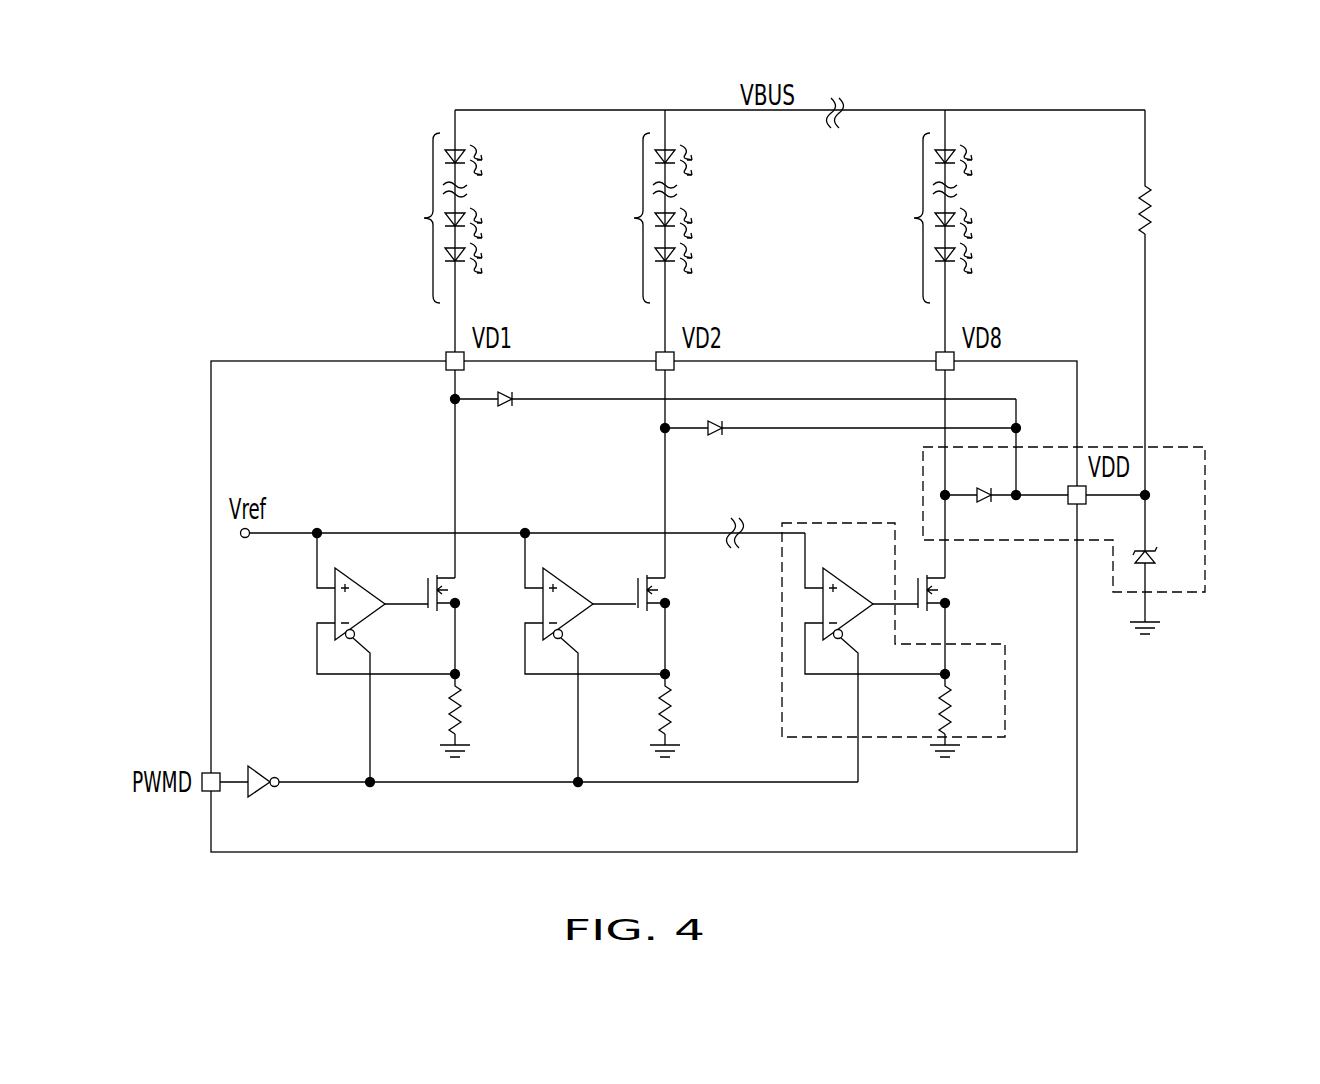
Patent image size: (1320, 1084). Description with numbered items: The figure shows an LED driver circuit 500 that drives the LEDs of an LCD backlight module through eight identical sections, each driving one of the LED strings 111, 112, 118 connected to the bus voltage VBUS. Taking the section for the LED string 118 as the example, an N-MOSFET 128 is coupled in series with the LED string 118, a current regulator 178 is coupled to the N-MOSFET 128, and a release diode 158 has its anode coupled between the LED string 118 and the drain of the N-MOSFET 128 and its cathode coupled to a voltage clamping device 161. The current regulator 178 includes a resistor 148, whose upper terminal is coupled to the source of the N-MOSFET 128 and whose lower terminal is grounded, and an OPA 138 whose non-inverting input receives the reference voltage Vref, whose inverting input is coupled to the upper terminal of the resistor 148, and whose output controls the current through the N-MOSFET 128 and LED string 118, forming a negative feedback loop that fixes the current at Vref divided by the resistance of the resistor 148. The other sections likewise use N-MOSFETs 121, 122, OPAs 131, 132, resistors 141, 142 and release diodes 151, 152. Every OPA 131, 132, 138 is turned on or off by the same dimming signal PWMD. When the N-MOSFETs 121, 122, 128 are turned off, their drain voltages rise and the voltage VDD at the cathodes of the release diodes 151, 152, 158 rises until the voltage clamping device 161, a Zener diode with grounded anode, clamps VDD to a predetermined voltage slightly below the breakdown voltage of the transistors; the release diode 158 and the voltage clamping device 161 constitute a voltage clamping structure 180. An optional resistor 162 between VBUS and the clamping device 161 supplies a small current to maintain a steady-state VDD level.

The LED string 111 is at (429, 231).
The LED string 112 is at (639, 231).
The LED string 118 is at (917, 231).
The N-MOSFET 121 is at (464, 593).
The N-MOSFET 122 is at (674, 593).
The N-MOSFET 128 is at (955, 593).
The OPA 131 is at (386, 657).
The OPA 132 is at (595, 657).
The OPA 138 is at (875, 657).
The resistor 141 is at (472, 680).
The resistor 142 is at (682, 680).
The resistor 148 is at (961, 680).
The release diode 151 is at (735, 422).
The release diode 152 is at (840, 448).
The release diode 158 is at (1006, 477).
The voltage clamping device 161 is at (1152, 554).
The resistor 162 is at (1166, 302).
The current regulator 178 is at (893, 739).
The voltage clamping structure 180 is at (1207, 545).
The LED driver circuit 500 is at (1077, 762).